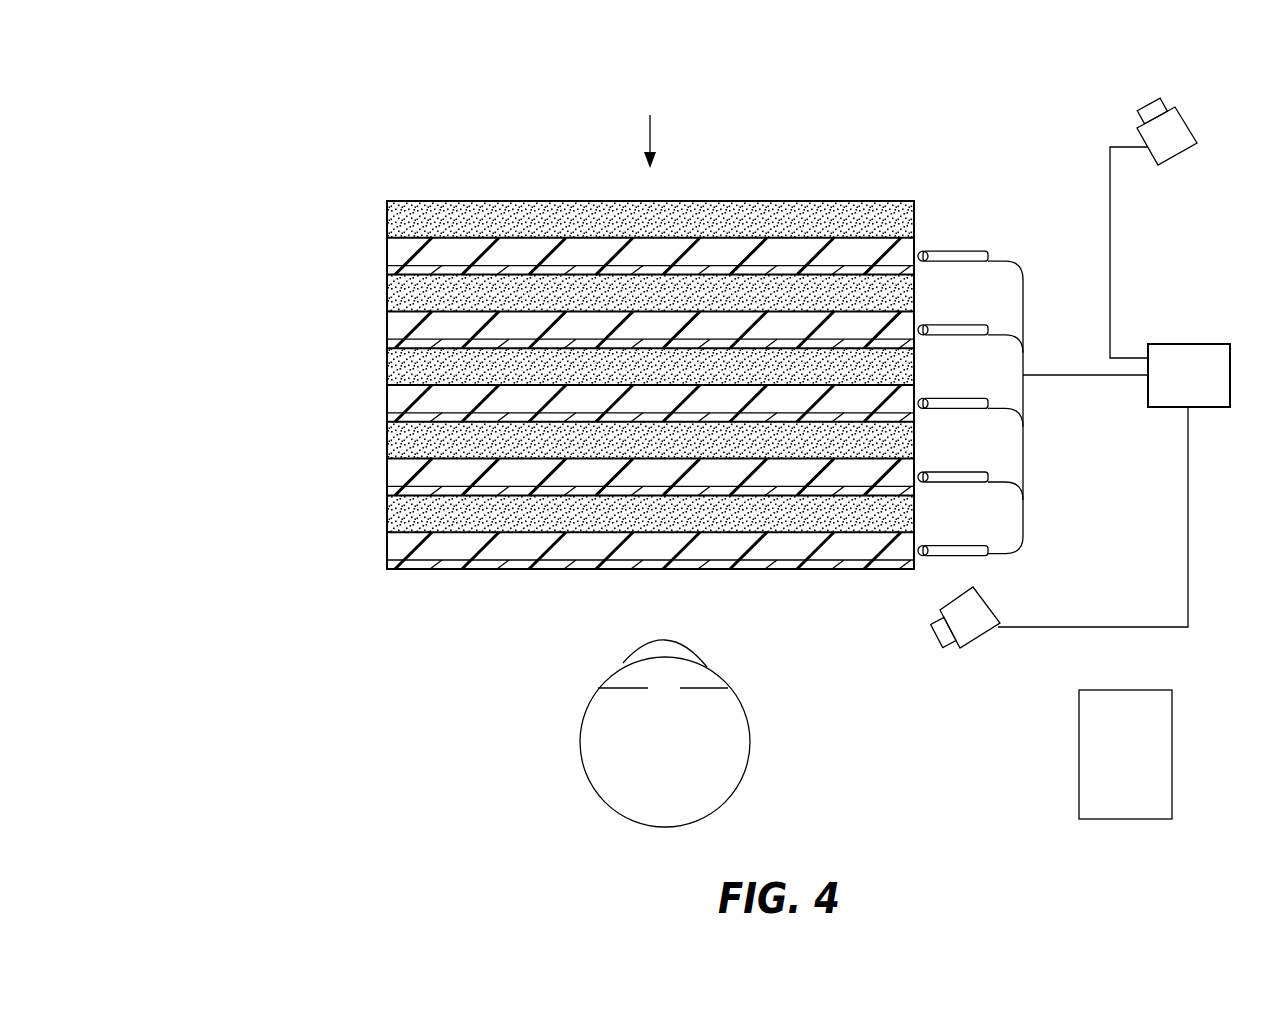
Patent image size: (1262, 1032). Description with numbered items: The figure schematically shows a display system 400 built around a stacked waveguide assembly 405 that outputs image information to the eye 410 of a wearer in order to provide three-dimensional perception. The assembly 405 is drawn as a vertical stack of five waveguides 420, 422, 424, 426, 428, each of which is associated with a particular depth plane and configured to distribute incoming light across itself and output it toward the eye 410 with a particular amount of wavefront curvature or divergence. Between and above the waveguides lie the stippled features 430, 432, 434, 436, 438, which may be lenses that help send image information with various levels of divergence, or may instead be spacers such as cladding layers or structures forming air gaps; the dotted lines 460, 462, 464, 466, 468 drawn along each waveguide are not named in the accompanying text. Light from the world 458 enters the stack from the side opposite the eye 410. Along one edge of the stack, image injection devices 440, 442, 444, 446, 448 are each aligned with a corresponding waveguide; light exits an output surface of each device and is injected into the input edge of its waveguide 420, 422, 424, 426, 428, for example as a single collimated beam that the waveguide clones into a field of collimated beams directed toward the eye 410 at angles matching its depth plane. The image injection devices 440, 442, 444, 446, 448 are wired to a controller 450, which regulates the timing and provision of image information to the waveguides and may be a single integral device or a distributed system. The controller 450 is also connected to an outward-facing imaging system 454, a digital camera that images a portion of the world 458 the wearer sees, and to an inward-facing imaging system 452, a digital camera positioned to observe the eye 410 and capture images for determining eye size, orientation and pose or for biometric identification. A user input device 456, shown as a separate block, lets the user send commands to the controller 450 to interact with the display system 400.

The display system 400 is at (257, 110).
The stacked waveguide assembly 405 is at (734, 150).
The eye 410 is at (580, 755).
The waveguide 420 is at (387, 532).
The waveguide 422 is at (387, 459).
The waveguide 424 is at (387, 385).
The waveguide 426 is at (387, 311).
The waveguide 428 is at (387, 238).
The feature 430 is at (914, 515).
The feature 432 is at (914, 441).
The feature 434 is at (914, 368).
The feature 436 is at (914, 294).
The lens layer 438 is at (914, 220).
The image injection device 440 is at (988, 546).
The image injection device 442 is at (988, 472).
The image injection device 444 is at (988, 398).
The image injection device 446 is at (988, 325).
The image injection device 448 is at (988, 251).
The controller 450 is at (1188, 344).
The inward-facing imaging system 452 is at (975, 640).
The outward-facing imaging system 454 is at (1178, 155).
The user input device 456 is at (1079, 750).
The world 458 is at (648, 72).
The outcoupling optical element 460 is at (387, 560).
The outcoupling optical element 462 is at (387, 486).
The outcoupling optical element 464 is at (387, 413).
The outcoupling optical element 466 is at (387, 339).
The outcoupling optical element 468 is at (387, 266).